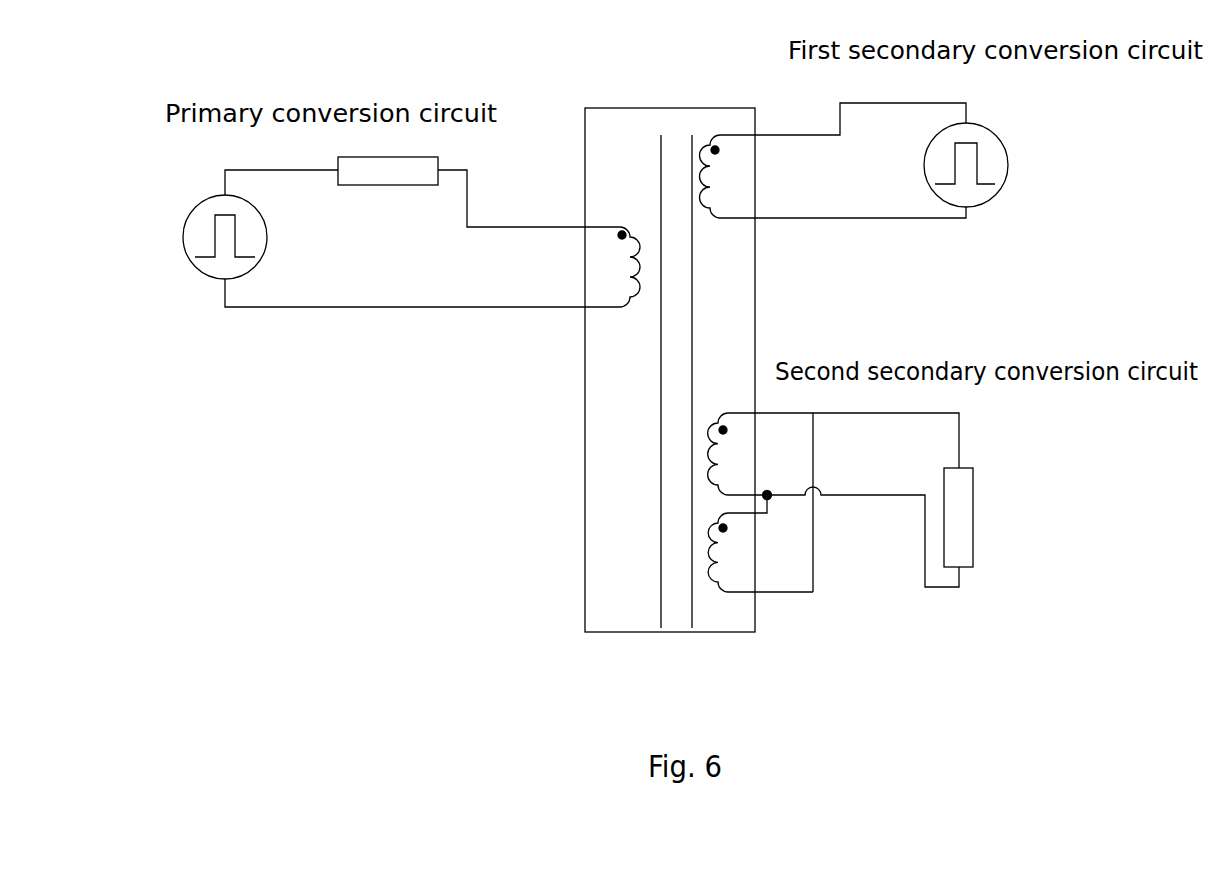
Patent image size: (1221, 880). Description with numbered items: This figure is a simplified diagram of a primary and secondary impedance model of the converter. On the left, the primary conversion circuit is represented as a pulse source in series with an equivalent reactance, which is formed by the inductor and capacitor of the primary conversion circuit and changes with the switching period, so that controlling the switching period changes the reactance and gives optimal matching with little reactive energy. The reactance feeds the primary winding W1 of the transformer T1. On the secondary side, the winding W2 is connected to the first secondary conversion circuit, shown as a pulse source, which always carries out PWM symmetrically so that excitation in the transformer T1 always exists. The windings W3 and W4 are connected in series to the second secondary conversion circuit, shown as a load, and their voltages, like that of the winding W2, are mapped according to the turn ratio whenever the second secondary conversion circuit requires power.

The transformer T1 is at (670, 370).
The winding W1 is at (614, 267).
The winding W2 is at (725, 176).
The winding W3 is at (731, 454).
The winding W4 is at (731, 552).